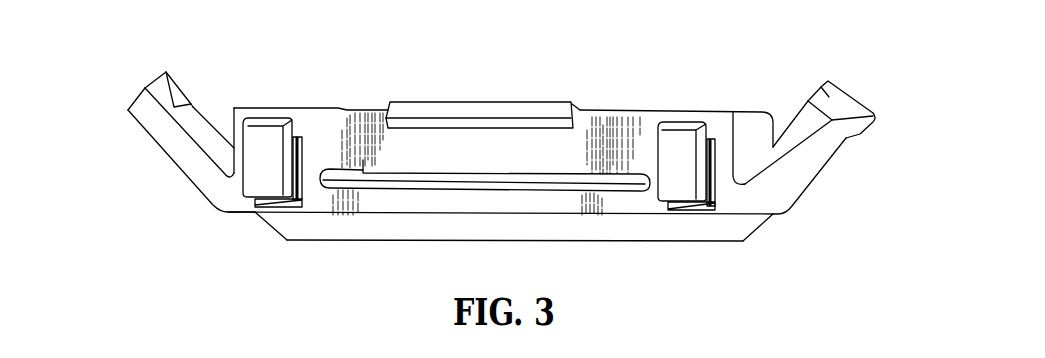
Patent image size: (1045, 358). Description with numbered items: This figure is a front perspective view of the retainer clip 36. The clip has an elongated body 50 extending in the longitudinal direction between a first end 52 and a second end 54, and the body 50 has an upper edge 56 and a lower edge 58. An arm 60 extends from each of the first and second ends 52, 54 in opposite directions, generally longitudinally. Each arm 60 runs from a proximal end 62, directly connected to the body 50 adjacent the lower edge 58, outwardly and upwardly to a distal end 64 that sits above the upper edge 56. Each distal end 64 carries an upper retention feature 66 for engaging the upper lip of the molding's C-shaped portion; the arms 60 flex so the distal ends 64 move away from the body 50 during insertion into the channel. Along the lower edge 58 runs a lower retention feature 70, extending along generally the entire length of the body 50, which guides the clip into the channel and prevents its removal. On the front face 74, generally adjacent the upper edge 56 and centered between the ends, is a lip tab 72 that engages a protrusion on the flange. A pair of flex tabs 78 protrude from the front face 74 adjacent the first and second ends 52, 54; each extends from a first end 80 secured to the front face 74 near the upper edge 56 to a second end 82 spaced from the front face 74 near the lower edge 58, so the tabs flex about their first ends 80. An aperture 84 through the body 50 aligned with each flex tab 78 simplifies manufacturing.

The retainer clip 36 is at (614, 128).
The elongated body 50 is at (420, 206).
The first end 52 is at (242, 107).
The second end 54 is at (747, 132).
The upper edge 56 is at (344, 108).
The lower edge 58 is at (617, 221).
The arm 60 is at (178, 153).
The proximal end 62 is at (222, 202).
The distal end 64 is at (133, 100).
The upper retention feature 66 is at (172, 92).
The lower retention feature 70 is at (443, 228).
The lip tab 72 is at (490, 117).
The front face 74 is at (510, 163).
The flex tab 78 is at (263, 168).
The first end 80 is at (273, 125).
The second end 82 is at (279, 182).
The aperture 84 is at (302, 175).